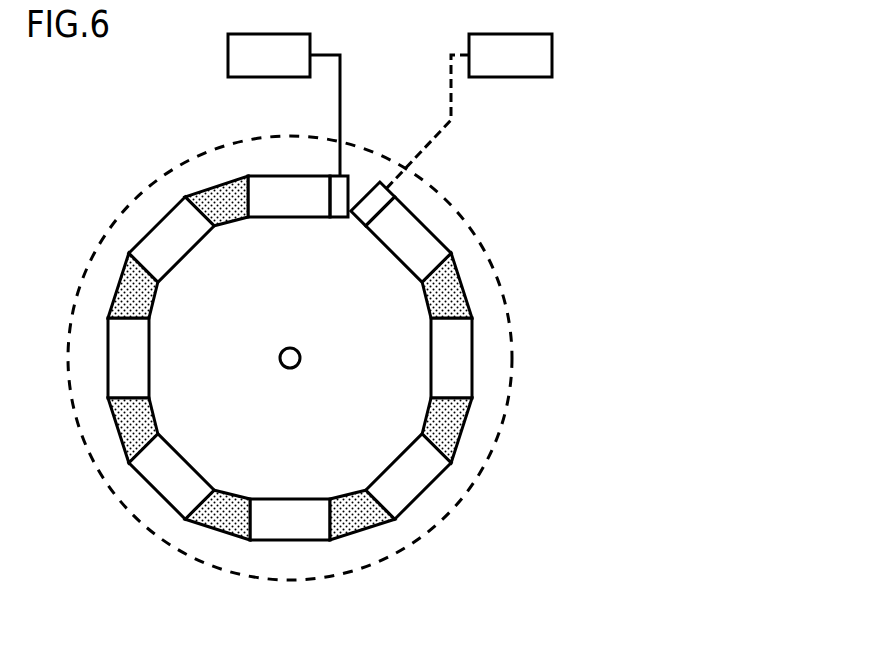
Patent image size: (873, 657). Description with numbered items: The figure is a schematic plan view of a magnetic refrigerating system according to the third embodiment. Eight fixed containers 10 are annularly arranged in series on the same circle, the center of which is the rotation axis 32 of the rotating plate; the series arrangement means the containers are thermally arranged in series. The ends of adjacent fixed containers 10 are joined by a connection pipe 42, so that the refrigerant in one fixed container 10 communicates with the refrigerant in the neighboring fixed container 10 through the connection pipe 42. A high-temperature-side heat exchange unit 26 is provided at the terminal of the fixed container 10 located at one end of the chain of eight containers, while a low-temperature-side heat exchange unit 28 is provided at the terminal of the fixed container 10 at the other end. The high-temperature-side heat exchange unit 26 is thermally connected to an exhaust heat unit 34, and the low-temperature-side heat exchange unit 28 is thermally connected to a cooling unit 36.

The fixed container 10 is at (300, 216).
The high-temperature-side heat exchange unit 26 is at (336, 176).
The low-temperature-side heat exchange unit 28 is at (388, 196).
The rotation axis 32 is at (285, 366).
The exhaust heat unit 34 is at (238, 53).
The cooling unit 36 is at (545, 56).
The connection pipe 42 is at (225, 190).